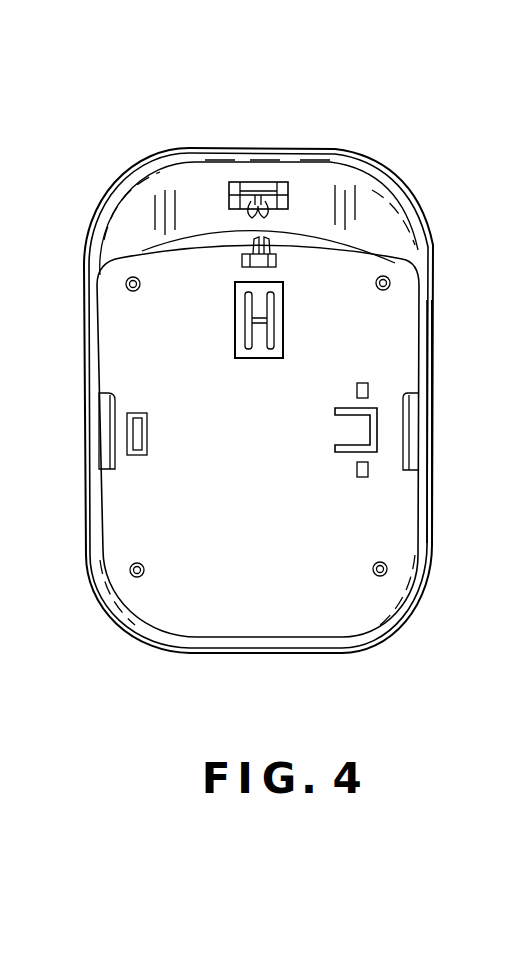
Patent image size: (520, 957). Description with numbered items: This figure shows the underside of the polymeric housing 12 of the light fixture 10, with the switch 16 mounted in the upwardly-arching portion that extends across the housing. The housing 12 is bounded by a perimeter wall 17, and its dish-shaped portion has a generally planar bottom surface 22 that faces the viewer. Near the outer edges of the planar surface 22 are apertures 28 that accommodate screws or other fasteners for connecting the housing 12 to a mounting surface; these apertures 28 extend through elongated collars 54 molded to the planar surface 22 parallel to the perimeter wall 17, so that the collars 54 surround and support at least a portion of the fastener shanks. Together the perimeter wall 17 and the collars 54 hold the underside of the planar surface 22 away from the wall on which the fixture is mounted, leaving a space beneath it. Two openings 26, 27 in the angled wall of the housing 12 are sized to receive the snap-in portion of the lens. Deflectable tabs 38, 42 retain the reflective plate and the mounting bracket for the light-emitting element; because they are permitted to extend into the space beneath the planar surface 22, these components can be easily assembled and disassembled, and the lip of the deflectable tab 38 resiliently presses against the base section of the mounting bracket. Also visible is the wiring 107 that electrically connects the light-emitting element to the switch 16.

The light fixture 10 is at (378, 144).
The polymeric housing 12 is at (427, 175).
The switch 16 is at (268, 185).
The perimeter wall 17 is at (432, 499).
The generally planar bottom surface 22 is at (189, 590).
The opening 26 is at (106, 412).
The opening 27 is at (408, 472).
The apertures 28 is at (375, 282).
The deflectable tab 38 is at (262, 311).
The deflectable tab 42 is at (350, 430).
The elongated collars 54 is at (381, 291).
The wiring 107 is at (243, 252).